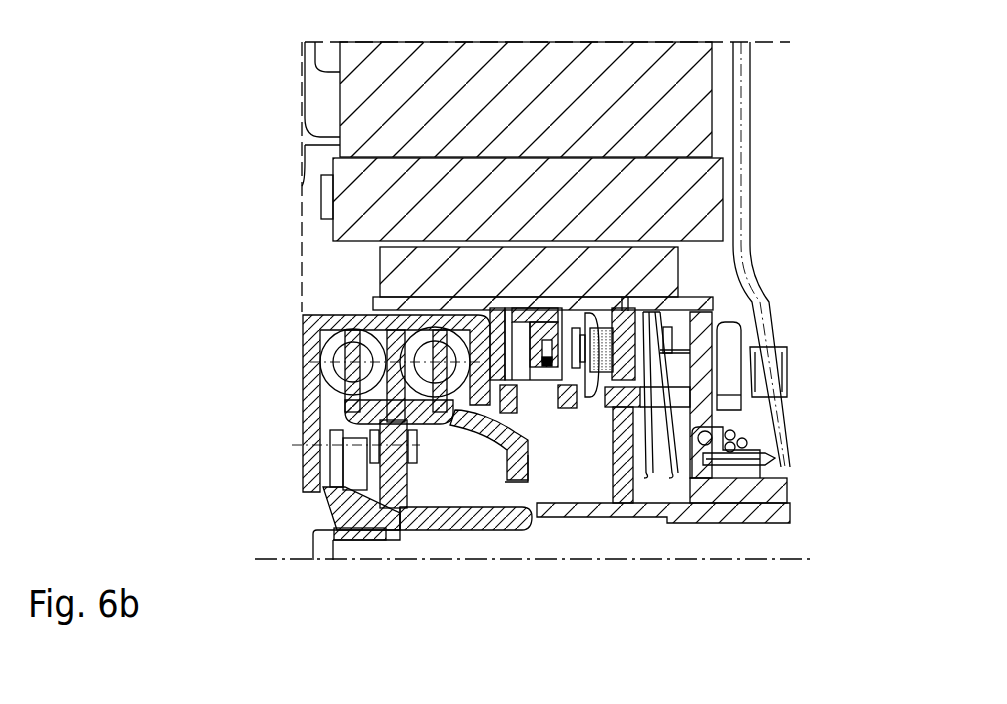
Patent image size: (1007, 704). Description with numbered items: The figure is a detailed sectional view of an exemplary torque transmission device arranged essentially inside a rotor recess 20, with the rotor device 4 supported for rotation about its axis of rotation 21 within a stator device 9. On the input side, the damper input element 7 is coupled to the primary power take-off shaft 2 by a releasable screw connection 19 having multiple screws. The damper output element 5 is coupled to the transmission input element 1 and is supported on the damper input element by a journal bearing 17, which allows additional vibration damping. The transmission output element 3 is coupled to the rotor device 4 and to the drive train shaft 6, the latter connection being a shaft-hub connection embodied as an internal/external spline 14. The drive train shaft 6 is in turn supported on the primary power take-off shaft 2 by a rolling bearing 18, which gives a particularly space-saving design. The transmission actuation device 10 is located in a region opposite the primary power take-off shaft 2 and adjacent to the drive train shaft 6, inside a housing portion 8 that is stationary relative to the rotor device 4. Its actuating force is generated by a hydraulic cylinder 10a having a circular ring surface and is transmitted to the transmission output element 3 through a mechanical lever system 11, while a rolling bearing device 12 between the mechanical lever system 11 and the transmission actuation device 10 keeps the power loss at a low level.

The transmission input element 1 is at (527, 524).
The primary power take-off shaft 2 is at (303, 503).
The transmission output element 3 is at (712, 415).
The rotor device 4 is at (665, 272).
The damper output element 5 is at (310, 392).
The drive train shaft 6 is at (790, 522).
The damper input element 7 is at (305, 413).
The housing portion 8 is at (712, 317).
The stator device 9 is at (712, 178).
The transmission actuation device 10 is at (745, 447).
The hydraulic cylinder 10a is at (770, 500).
The mechanical lever system 11 is at (658, 335).
The rolling bearing device 12 is at (713, 478).
The internal/external spline 14 is at (622, 510).
The journal bearing 17 is at (330, 505).
The rolling bearing 18 is at (318, 548).
The screw connection 19 is at (300, 447).
The rotor recess 20 is at (300, 333).
The axis of rotation 21 is at (463, 560).